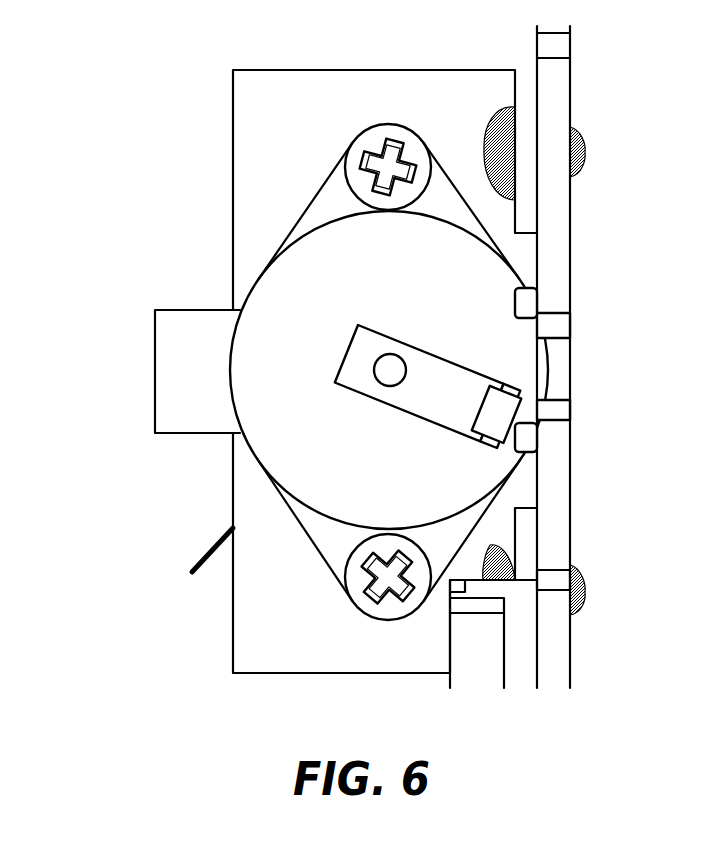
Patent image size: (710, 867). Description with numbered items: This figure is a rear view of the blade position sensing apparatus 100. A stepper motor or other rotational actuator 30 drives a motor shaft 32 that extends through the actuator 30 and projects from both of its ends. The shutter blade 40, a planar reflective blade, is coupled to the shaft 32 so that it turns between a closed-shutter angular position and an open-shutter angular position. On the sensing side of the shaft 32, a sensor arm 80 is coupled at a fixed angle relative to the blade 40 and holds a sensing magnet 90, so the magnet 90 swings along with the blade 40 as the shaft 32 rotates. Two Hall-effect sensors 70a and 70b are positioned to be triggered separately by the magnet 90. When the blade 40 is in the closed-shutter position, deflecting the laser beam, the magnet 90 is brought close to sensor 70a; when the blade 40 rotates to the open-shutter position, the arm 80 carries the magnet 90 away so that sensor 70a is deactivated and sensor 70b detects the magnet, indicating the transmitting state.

The blade position sensing apparatus 100 is at (613, 202).
The rotational actuator 30 is at (305, 260).
The motor shaft 32 is at (385, 368).
The sensor arm 80 is at (433, 397).
The sensing magnet 90 is at (498, 418).
The Hall-effect sensor 70a is at (523, 435).
The Hall-effect sensor 70b is at (525, 302).
The shutter blade 40 is at (182, 563).